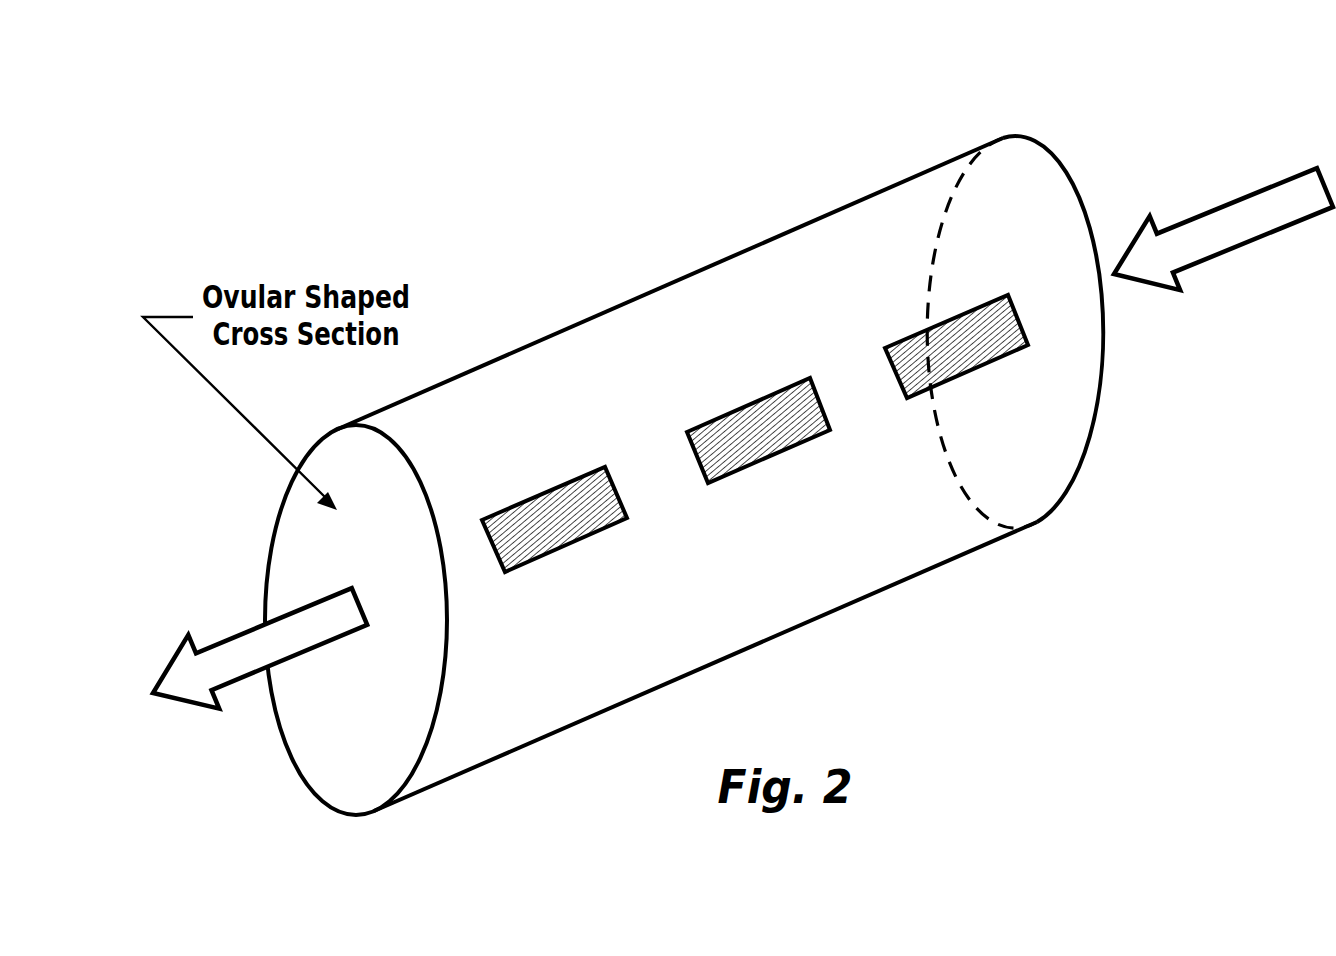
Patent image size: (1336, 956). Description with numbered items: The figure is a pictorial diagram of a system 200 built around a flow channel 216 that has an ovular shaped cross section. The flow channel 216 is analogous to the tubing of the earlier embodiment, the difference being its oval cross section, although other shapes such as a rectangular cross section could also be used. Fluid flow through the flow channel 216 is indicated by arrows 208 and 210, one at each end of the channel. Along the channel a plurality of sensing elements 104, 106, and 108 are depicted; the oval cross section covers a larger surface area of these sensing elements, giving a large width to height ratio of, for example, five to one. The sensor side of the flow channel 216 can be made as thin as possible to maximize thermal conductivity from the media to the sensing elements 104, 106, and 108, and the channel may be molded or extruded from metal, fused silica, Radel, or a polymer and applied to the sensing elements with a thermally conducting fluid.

The system 200 is at (716, 454).
The flow channel 216 is at (698, 268).
The sensing element 104 is at (505, 510).
The sensing element 106 is at (707, 424).
The sensing element 108 is at (895, 343).
The arrow 208 is at (1230, 250).
The arrow 210 is at (183, 702).